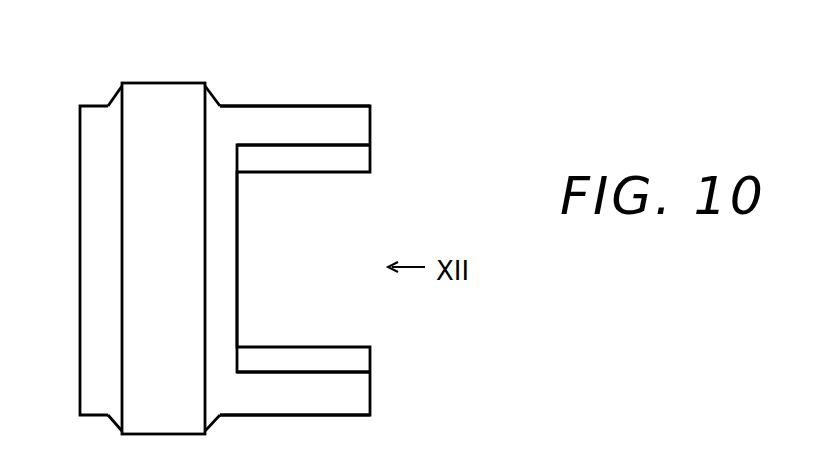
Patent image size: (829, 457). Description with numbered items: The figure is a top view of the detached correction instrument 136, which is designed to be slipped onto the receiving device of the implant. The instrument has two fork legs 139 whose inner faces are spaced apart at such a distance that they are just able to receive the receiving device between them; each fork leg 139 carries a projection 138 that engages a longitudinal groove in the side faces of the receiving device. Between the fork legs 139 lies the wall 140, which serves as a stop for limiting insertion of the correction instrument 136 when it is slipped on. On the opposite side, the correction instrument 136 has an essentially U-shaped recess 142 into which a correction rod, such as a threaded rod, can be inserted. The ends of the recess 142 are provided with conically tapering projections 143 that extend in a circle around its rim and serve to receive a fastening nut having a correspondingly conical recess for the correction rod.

The correction instrument 136 is at (334, 86).
The projections 138 is at (342, 158).
The fork legs 139 is at (258, 122).
The wall 140 is at (248, 278).
The U-shaped recess 142 is at (150, 289).
The conically tapering projections 143 is at (112, 101).